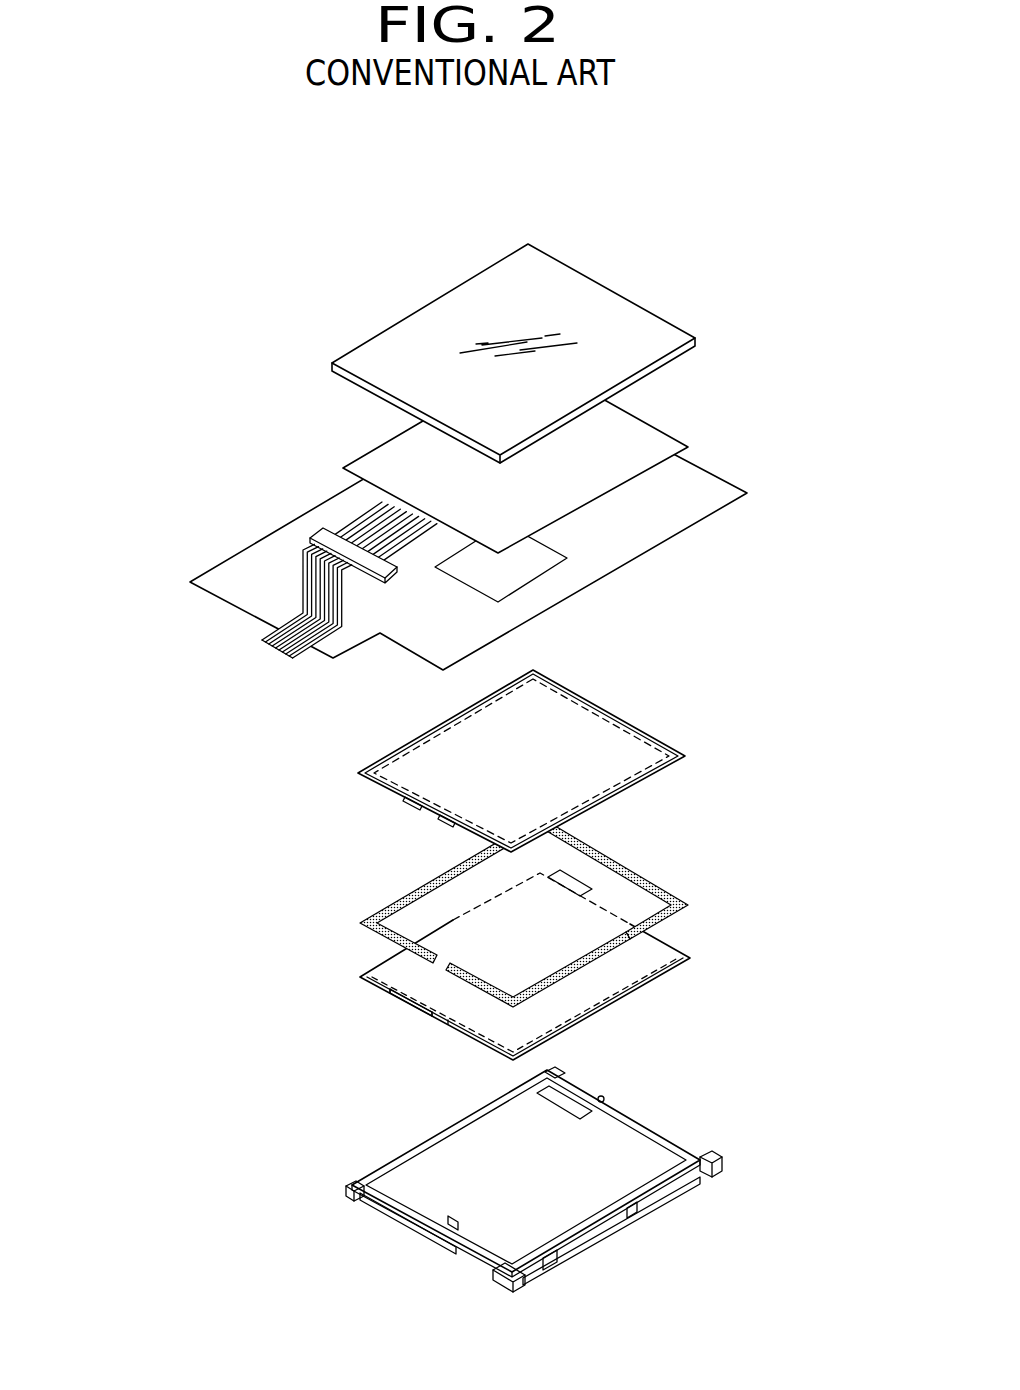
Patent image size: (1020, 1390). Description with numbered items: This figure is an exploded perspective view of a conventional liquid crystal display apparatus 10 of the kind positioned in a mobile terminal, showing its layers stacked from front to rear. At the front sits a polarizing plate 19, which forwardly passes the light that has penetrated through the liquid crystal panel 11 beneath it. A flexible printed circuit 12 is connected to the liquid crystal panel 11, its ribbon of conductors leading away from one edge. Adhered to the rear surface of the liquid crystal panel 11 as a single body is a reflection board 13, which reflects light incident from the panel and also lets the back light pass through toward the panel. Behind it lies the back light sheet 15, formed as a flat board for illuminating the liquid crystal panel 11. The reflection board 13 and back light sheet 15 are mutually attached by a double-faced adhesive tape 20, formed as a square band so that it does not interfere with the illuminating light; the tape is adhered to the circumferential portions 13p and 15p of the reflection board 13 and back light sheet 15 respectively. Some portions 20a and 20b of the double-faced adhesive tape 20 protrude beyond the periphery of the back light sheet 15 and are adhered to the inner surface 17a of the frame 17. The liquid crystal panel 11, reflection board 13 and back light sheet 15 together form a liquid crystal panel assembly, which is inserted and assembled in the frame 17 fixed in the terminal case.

The liquid crystal display apparatus 10 is at (206, 326).
The polarizing plate 19 is at (362, 358).
The liquid crystal panel 11 is at (385, 456).
The flexible printed circuit 12 is at (237, 588).
The reflection board 13 is at (405, 766).
The circumferential portion of the reflection board 13p is at (408, 801).
The double-faced adhesive tape 20 is at (378, 912).
The protruded portion of the double-faced adhesive tape 20a is at (590, 969).
The protruded portion of the double-faced adhesive tape 20b is at (376, 927).
The back light sheet 15 is at (415, 983).
The circumferential portion of the back light sheet 15p is at (470, 1036).
The frame 17 is at (393, 1161).
The inner surface of the frame 17a is at (398, 1223).